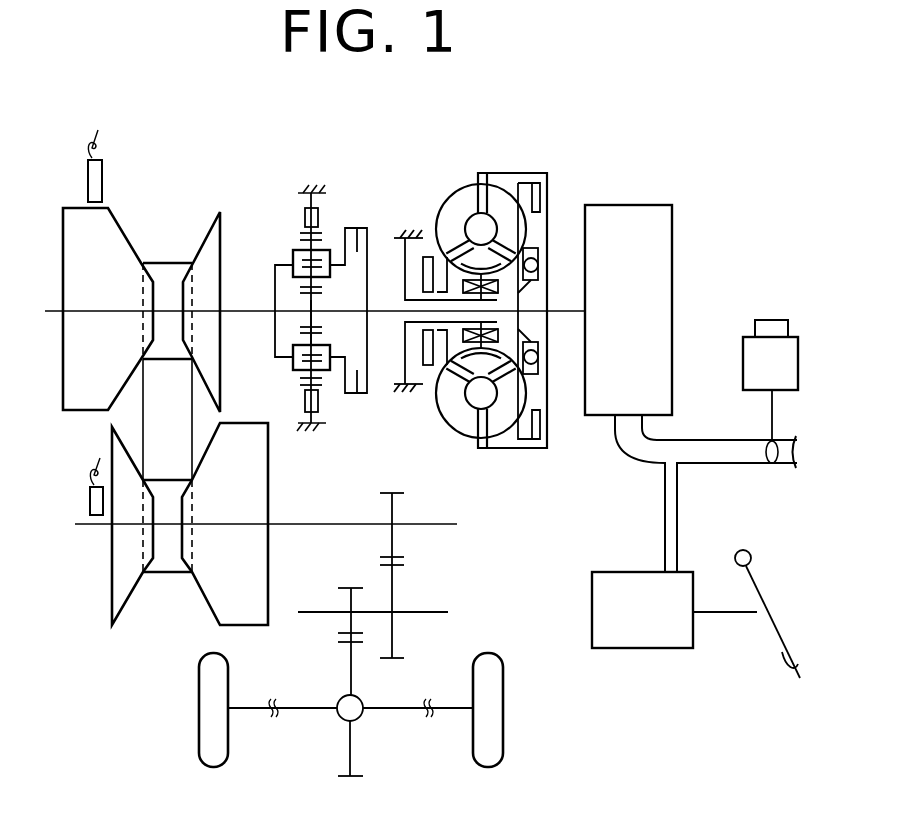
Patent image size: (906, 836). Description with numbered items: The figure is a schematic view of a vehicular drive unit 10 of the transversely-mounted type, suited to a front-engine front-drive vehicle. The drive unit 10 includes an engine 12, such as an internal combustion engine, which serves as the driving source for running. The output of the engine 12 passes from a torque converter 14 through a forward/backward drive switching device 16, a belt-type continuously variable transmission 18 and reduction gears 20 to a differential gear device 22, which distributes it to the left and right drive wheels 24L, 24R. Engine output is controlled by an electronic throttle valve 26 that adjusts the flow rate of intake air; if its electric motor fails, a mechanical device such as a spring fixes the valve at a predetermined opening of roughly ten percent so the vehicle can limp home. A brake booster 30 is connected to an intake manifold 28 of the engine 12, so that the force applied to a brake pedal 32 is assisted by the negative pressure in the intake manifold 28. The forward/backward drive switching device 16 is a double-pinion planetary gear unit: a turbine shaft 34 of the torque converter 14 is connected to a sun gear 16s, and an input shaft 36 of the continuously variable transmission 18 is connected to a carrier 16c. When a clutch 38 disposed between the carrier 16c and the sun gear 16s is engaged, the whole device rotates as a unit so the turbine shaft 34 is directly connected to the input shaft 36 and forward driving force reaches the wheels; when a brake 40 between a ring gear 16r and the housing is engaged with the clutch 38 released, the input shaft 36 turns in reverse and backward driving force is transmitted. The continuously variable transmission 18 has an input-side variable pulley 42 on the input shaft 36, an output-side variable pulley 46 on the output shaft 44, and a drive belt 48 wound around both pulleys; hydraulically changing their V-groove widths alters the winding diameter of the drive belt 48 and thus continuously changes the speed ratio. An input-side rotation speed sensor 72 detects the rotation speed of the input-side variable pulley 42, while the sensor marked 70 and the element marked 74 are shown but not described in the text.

The vehicular drive unit 10 is at (625, 150).
The engine 12 is at (660, 273).
The torque converter 14 is at (498, 158).
The forward/backward drive switching device 16 is at (340, 217).
The carrier 16c is at (292, 253).
The sun gear 16s is at (300, 320).
The ring gear 16r is at (305, 388).
The belt-type continuously variable transmission 18 is at (165, 633).
The reduction gears 20 is at (472, 573).
The differential gear device 22 is at (345, 718).
The left drive wheel 24L is at (208, 728).
The right drive wheel 24R is at (492, 720).
The electronic throttle valve 26 is at (750, 370).
The intake manifold 28 is at (708, 455).
The brake booster 30 is at (607, 612).
The brake pedal 32 is at (758, 636).
The turbine shaft 34 is at (375, 313).
The input shaft 36 is at (240, 308).
The clutch 38 is at (348, 395).
The brake 40 is at (303, 208).
The input-side variable pulley 42 is at (72, 228).
The output shaft 44 is at (333, 528).
The output-side variable pulley 46 is at (253, 505).
The drive belt 48 is at (167, 263).
The output speed sensor 70 is at (90, 497).
The input-side rotation speed sensor 72 is at (100, 177).
The throttle sensor 74 is at (768, 328).